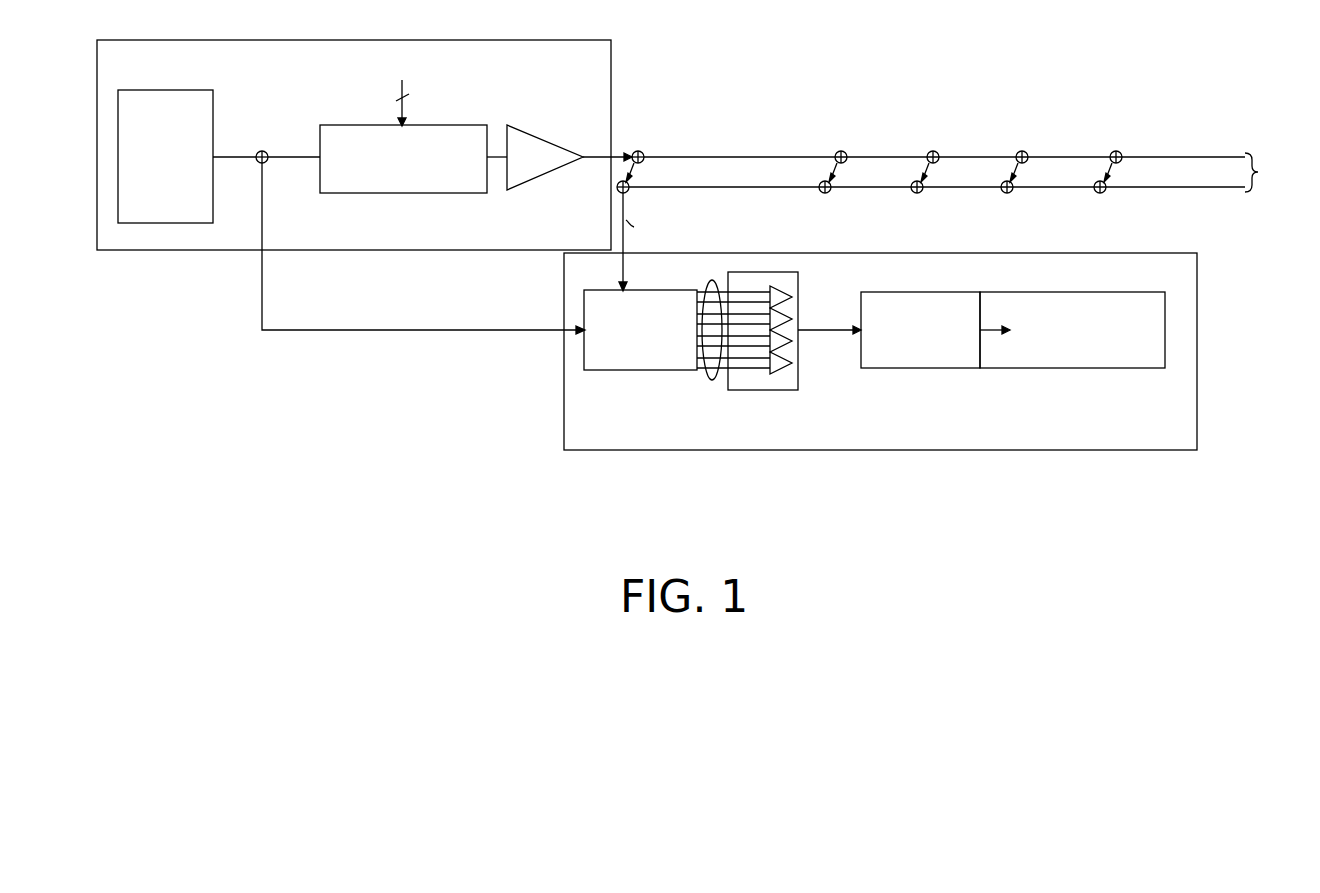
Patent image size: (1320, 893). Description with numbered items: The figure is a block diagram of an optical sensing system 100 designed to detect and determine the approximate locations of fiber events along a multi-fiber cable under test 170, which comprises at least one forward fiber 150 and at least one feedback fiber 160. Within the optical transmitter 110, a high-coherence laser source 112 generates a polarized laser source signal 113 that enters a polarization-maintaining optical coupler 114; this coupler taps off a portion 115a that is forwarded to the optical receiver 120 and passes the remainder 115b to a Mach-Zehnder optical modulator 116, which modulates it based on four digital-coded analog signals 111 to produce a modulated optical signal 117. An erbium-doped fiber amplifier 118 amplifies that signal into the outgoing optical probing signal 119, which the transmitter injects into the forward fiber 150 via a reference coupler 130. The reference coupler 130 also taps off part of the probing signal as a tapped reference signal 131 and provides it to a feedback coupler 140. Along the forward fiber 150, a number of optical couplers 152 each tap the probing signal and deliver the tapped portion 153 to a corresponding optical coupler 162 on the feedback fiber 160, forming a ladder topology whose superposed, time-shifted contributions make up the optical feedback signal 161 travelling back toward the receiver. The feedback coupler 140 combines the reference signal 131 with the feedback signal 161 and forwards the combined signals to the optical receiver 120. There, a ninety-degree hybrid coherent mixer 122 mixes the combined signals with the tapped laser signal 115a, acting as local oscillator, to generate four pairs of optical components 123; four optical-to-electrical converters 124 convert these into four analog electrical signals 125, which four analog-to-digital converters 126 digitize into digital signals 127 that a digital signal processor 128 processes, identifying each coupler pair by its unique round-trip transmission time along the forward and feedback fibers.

The optical sensing system 100 is at (1029, 581).
The optical transmitter 110 is at (352, 39).
The digital-coded analog signals 111 is at (401, 91).
The laser source 112 is at (172, 89).
The polarized laser source signal 113 is at (238, 158).
The polarization-maintaining optical coupler 114 is at (264, 151).
The tapped portion of laser signal 115a is at (347, 332).
The remainder of laser signal 115b is at (298, 158).
The Mach-Zehnder optical modulator 116 is at (445, 124).
The modulated optical signal 117 is at (498, 160).
The erbium-doped fiber amplifier 118 is at (541, 138).
The optical probing signal 119 is at (597, 159).
The optical receiver 120 is at (890, 451).
The 90-degree hybrid coherent mixer 122 is at (676, 290).
The optical components 123 is at (712, 380).
The optical-to-electrical converters 124 is at (800, 284).
The analog electrical signals 125 is at (838, 334).
The analog-to-digital converters 126 is at (924, 291).
The digital signals 127 is at (1006, 327).
The digital signal processor 128 is at (1081, 291).
The reference coupler 130 is at (640, 151).
The tapped reference signal 131 is at (642, 165).
The feedback coupler 140 is at (630, 191).
The forward fiber 150 is at (1187, 156).
The optical couplers 152 is at (843, 151).
The tapped portion 153 is at (845, 166).
The feedback fiber 160 is at (1177, 189).
The optical feedback signal 161 is at (750, 193).
The optical couplers 162 is at (832, 192).
The cable under test 170 is at (1258, 172).